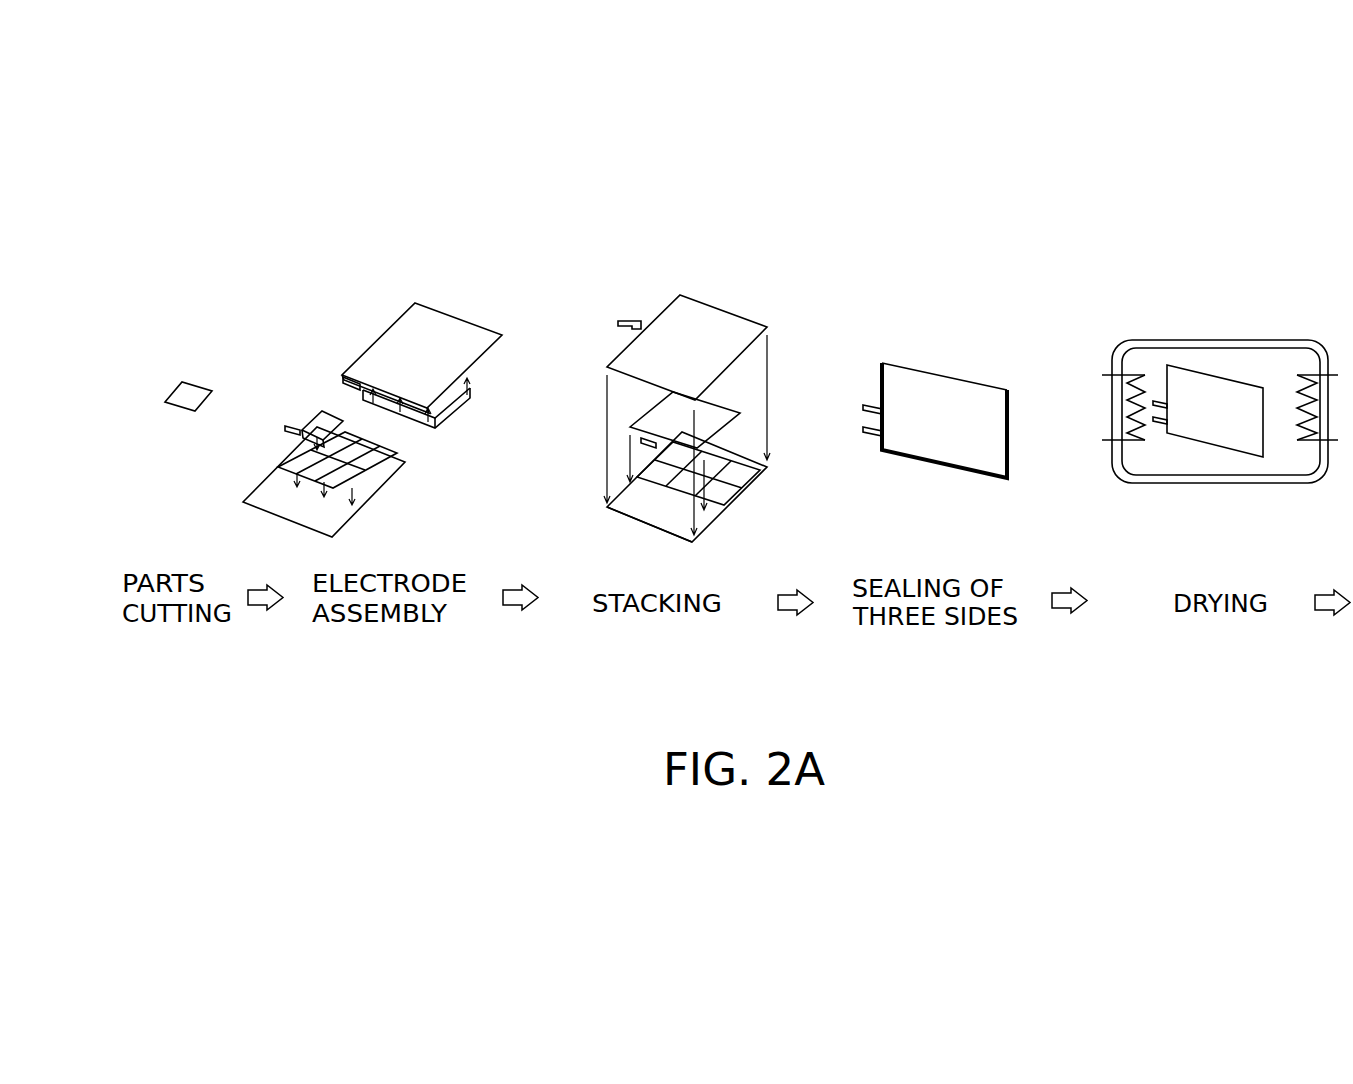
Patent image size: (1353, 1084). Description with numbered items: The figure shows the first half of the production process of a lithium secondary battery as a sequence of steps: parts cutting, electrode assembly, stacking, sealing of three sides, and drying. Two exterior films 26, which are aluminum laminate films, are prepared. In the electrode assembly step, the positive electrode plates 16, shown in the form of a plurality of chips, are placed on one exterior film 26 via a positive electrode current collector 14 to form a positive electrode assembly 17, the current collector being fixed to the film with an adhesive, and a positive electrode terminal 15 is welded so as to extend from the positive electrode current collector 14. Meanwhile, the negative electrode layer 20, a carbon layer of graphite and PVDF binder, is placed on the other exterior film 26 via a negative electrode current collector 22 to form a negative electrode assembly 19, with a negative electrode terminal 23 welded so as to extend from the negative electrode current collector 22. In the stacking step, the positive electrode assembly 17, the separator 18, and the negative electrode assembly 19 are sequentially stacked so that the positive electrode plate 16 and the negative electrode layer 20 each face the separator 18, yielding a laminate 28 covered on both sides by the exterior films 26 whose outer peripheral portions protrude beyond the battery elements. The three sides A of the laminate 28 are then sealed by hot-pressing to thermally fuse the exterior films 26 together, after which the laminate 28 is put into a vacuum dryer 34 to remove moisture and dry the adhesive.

The positive electrode current collector 14 is at (330, 425).
The positive electrode terminal 15 is at (288, 428).
The positive electrode plate 16 is at (190, 387).
The positive electrode assembly 17 is at (617, 524).
The separator 18 is at (728, 418).
The negative electrode assembly 19 is at (696, 290).
The negative electrode layer 20 is at (448, 421).
The negative electrode current collector 22 is at (450, 408).
The negative electrode terminal 23 is at (343, 378).
The exterior film 26 is at (454, 335).
The laminate 28 is at (977, 398).
The vacuum dryer 34 is at (1213, 483).
The three sides A is at (882, 375).